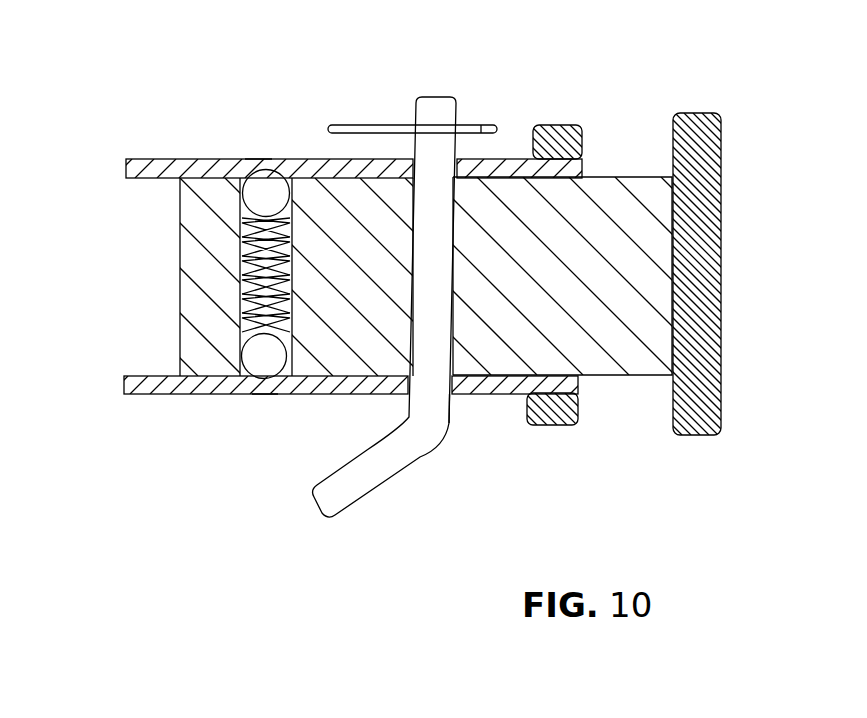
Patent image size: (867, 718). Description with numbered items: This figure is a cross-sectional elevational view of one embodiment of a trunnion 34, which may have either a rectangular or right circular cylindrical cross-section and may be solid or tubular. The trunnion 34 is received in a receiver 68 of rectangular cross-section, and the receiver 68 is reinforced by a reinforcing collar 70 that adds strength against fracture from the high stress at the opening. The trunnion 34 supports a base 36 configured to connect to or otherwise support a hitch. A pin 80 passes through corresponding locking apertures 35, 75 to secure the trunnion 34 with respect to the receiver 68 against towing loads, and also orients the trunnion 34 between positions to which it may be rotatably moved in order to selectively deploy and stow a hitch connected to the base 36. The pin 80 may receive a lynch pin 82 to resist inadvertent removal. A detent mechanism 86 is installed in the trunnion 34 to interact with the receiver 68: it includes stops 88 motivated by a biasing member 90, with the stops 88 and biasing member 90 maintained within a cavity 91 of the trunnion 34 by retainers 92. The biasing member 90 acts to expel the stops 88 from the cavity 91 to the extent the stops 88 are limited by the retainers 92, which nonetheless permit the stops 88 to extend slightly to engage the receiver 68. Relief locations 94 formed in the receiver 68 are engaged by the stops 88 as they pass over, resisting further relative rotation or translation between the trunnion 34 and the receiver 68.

The trunnion 34 is at (603, 329).
The locking aperture 35 is at (457, 259).
The base 36 is at (694, 114).
The receiver 68 is at (152, 392).
The reinforcing collar 70 is at (553, 126).
The locking aperture 75 is at (453, 397).
The pin 80 is at (431, 99).
The lynch pin 82 is at (482, 126).
The detent mechanism 86 is at (265, 143).
The stop 88 is at (283, 172).
The biasing member 90 is at (293, 242).
The cavity 91 is at (293, 293).
The retainer 92 is at (243, 375).
The relief location 94 is at (257, 158).